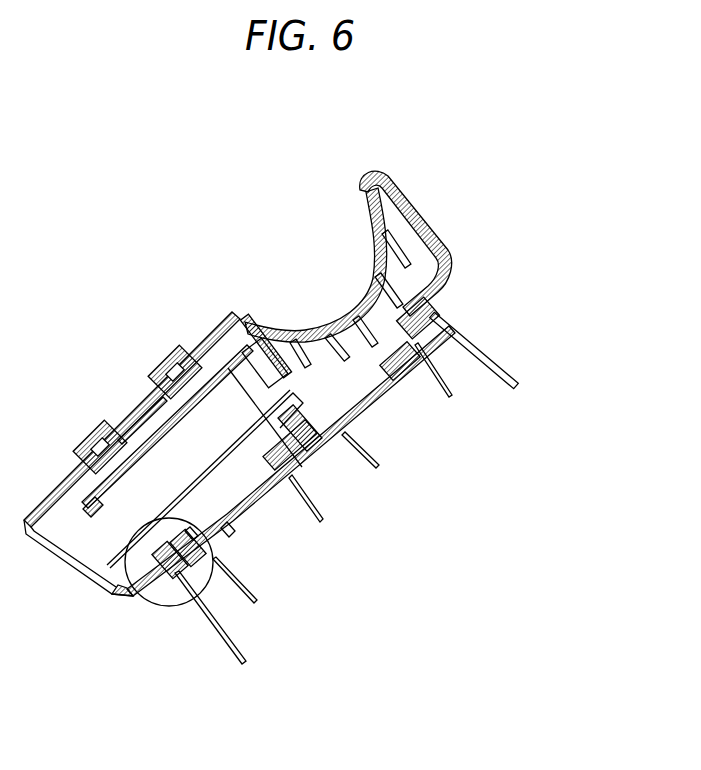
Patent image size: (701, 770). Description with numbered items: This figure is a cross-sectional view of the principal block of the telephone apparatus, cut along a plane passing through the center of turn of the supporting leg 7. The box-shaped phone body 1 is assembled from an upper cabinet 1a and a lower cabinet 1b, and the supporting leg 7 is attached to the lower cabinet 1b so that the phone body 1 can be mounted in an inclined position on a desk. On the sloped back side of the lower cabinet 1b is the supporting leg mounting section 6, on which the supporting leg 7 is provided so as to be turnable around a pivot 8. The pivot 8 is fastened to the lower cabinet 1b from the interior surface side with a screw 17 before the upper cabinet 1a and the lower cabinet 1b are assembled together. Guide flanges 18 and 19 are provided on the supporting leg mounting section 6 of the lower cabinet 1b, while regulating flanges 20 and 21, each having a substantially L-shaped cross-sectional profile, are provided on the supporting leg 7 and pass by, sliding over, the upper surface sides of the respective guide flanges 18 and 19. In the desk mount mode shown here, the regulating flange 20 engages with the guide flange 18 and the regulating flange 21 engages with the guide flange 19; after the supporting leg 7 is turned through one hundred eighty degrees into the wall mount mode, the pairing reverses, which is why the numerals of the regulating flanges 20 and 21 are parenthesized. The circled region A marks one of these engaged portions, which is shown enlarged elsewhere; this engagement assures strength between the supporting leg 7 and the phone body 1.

The phone body 1 is at (401, 239).
The upper cabinet 1a is at (243, 322).
The lower cabinet 1b is at (450, 261).
The supporting leg mounting section 6 is at (237, 530).
The supporting leg 7 is at (480, 347).
The pivot 8 is at (307, 465).
The screw 17 is at (199, 340).
The guide flange 18 is at (185, 568).
The guide flange 19 is at (417, 347).
The regulating flange 20 is at (163, 583).
The regulating flange 21 is at (408, 322).
The region A is at (130, 597).